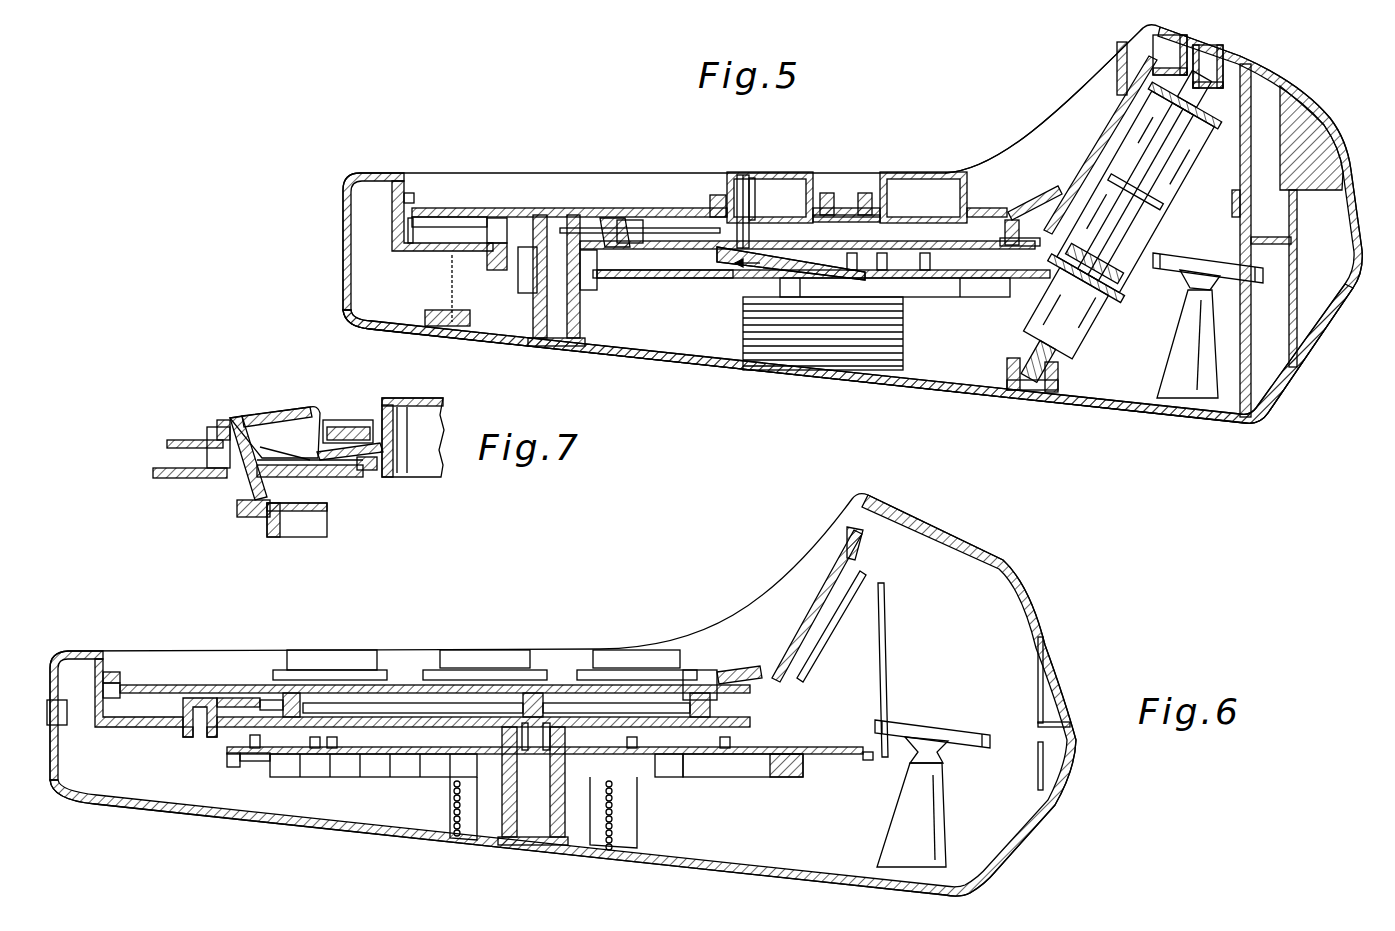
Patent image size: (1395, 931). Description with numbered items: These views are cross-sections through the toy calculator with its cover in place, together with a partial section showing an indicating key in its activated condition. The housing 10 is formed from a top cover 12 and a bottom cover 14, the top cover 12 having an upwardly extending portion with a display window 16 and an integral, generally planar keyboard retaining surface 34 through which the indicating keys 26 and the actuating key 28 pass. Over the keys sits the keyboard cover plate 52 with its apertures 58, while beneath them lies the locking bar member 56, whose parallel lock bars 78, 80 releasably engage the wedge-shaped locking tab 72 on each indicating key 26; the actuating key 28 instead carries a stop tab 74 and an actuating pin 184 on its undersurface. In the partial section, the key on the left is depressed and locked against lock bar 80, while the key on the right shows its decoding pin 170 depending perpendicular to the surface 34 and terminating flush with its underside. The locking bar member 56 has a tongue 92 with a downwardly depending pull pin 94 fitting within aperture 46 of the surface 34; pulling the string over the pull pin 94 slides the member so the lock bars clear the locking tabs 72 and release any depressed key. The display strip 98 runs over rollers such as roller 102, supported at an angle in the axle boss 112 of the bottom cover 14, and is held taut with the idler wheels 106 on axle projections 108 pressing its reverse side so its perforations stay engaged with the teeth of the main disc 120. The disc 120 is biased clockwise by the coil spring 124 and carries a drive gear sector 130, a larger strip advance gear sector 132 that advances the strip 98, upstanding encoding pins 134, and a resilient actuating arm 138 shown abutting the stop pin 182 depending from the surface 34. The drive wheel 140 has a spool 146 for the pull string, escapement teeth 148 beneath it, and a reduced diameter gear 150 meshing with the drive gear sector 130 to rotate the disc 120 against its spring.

In FIG. 5, the housing 10 is at (957, 150).
In FIG. 5, the top cover 12 is at (1333, 135).
In FIG. 6, the top cover 12 is at (1043, 613).
In FIG. 5, the bottom cover 14 is at (1312, 356).
In FIG. 6, the bottom cover 14 is at (1037, 820).
In FIG. 5, the display window 16 is at (1113, 126).
In FIG. 6, the display window 16 is at (822, 594).
In FIG. 5, the indicating keys 26 is at (927, 168).
In FIG. 7, the indicating keys 26 is at (265, 413).
In FIG. 6, the indicating keys 26 is at (320, 650).
In FIG. 5, the actuating key 28 is at (747, 196).
In FIG. 5, the keyboard retaining surface 34 is at (420, 240).
In FIG. 7, the keyboard retaining surface 34 is at (343, 478).
In FIG. 6, the keyboard retaining surface 34 is at (150, 713).
In FIG. 6, the aperture 46 is at (175, 718).
In FIG. 5, the keyboard cover plate 52 is at (462, 208).
In FIG. 6, the keyboard cover plate 52 is at (147, 713).
In FIG. 5, the locking bar member 56 is at (660, 207).
In FIG. 6, the locking bar member 56 is at (387, 705).
In FIG. 5, the apertures 58 is at (950, 203).
In FIG. 5, the locking tab 72 is at (887, 180).
In FIG. 5, the stop tab 74 is at (742, 168).
In FIG. 7, the lock bar 78 is at (380, 478).
In FIG. 7, the lock bar 80 is at (208, 460).
In FIG. 6, the tongue 92 is at (210, 698).
In FIG. 6, the pull pin 94 is at (183, 734).
In FIG. 5, the strip material 98 is at (1127, 133).
In FIG. 6, the strip material 98 is at (840, 612).
In FIG. 5, the roller 102 is at (1075, 312).
In FIG. 5, the idler wheels 106 is at (1203, 253).
In FIG. 6, the idler wheels 106 is at (917, 724).
In FIG. 5, the axle projections 108 is at (1172, 368).
In FIG. 6, the axle projections 108 is at (933, 813).
In FIG. 5, the axle boss 112 is at (1037, 380).
In FIG. 5, the main disc 120 is at (930, 283).
In FIG. 6, the main disc 120 is at (700, 754).
In FIG. 5, the coil spring 124 is at (899, 347).
In FIG. 6, the coil spring 124 is at (613, 823).
In FIG. 6, the drive gear sector 130 is at (227, 761).
In FIG. 6, the strip advance gear sector 132 is at (878, 745).
In FIG. 5, the encoding pins 134 is at (930, 258).
In FIG. 6, the encoding pins 134 is at (305, 748).
In FIG. 5, the resilient actuating arm 138 is at (775, 285).
In FIG. 5, the drive wheel 140 is at (597, 323).
In FIG. 5, the spool 146 is at (620, 210).
In FIG. 5, the teeth 148 is at (487, 260).
In FIG. 5, the reduced diameter gear 150 is at (523, 294).
In FIG. 7, the decoding pin 170 is at (248, 485).
In FIG. 5, the stop pin 182 is at (728, 284).
In FIG. 5, the actuating pin 184 is at (754, 200).